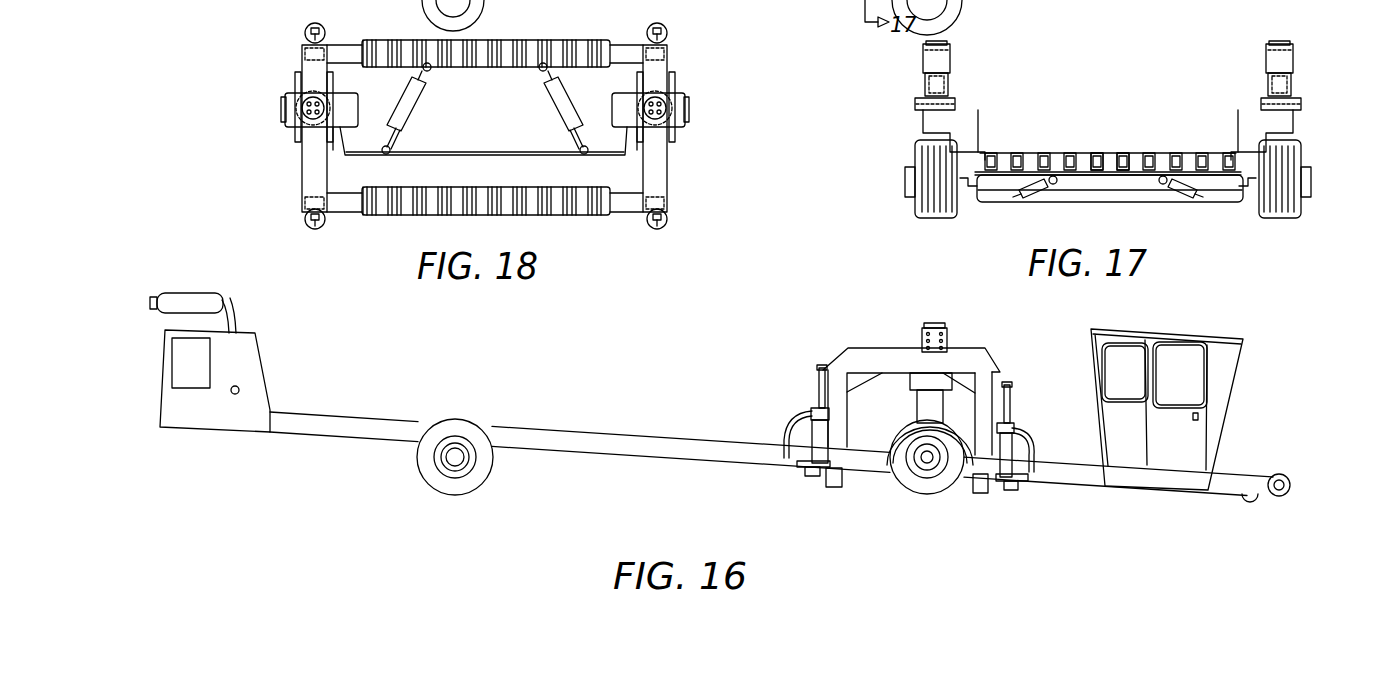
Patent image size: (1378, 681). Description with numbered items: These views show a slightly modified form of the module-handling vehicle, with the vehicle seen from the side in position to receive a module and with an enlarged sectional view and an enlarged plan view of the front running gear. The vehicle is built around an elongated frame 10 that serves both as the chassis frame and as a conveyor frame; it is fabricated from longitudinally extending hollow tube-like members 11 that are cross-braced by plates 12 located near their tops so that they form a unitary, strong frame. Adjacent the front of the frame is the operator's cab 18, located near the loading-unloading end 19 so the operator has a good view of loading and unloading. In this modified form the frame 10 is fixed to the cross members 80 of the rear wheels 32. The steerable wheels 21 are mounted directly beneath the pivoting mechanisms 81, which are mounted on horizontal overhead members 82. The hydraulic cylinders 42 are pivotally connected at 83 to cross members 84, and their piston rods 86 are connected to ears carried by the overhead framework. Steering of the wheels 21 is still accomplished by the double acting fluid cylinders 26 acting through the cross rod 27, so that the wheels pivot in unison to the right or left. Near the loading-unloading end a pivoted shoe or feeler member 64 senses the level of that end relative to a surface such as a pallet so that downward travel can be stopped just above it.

In FIG. 16, the elongated frame 10 is at (565, 440).
In FIG. 17, the longitudinally extending hollow tube-like members 11 is at (1043, 151).
In FIG. 17, the cross-bracing plates 12 is at (1145, 151).
In FIG. 16, the operator's cab 18 is at (1228, 362).
In FIG. 16, the loading-unloading end 19 is at (1283, 476).
In FIG. 18, the steerable wheels 21 is at (292, 79).
In FIG. 17, the steerable wheels 21 is at (932, 152).
In FIG. 18, the double acting fluid cylinders 26 is at (413, 101).
In FIG. 17, the double acting fluid cylinders 26 is at (1168, 192).
In FIG. 18, the cross rod 27 is at (447, 155).
In FIG. 17, the cross rod 27 is at (1088, 200).
In FIG. 16, the rear wheels 32 is at (477, 477).
In FIG. 18, the hydraulic cylinders 42 is at (668, 34).
In FIG. 16, the hydraulic cylinders 42 is at (817, 433).
In FIG. 16, the shoe or feeler member 64 is at (1258, 497).
In FIG. 18, the cross members of the rear wheels 80 is at (482, 2).
In FIG. 17, the pivoting mechanisms 81 is at (930, 58).
In FIG. 16, the pivoting mechanisms 81 is at (948, 333).
In FIG. 17, the horizontal overhead members 82 is at (950, 82).
In FIG. 16, the horizontal overhead members 82 is at (872, 355).
In FIG. 16, the pivotal connection 83 is at (817, 472).
In FIG. 18, the cross members 84 is at (338, 52).
In FIG. 16, the cross members 84 is at (843, 481).
In FIG. 16, the piston rods 86 is at (818, 376).